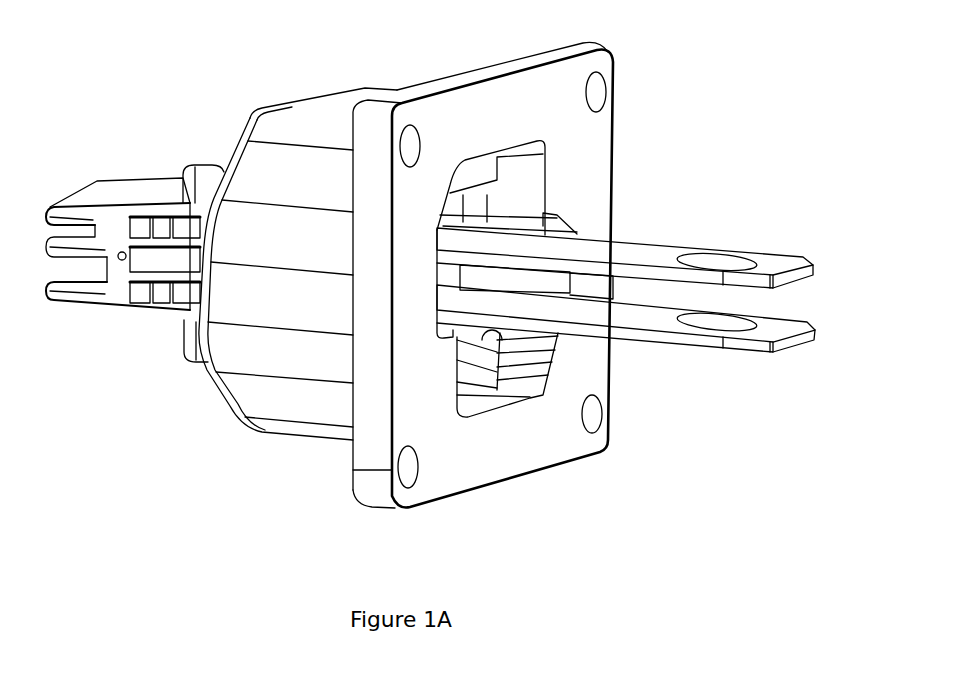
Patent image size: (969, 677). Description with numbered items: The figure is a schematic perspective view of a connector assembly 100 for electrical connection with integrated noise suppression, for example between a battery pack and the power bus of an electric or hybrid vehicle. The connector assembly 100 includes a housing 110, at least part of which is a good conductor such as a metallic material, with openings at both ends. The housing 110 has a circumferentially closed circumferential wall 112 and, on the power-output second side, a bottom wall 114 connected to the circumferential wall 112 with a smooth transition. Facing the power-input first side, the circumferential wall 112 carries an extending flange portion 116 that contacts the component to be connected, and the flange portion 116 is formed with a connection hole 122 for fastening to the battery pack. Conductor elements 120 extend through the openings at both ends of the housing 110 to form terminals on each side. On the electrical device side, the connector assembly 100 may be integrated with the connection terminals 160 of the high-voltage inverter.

The connector assembly 100 is at (723, 65).
The housing 110 is at (372, 88).
The circumferential wall 112 is at (327, 125).
The bottom wall 114 is at (240, 120).
The flange portion 116 is at (512, 57).
The conductor elements 120 is at (703, 220).
The connection hole 122 is at (413, 145).
The connection terminals 160 is at (113, 196).